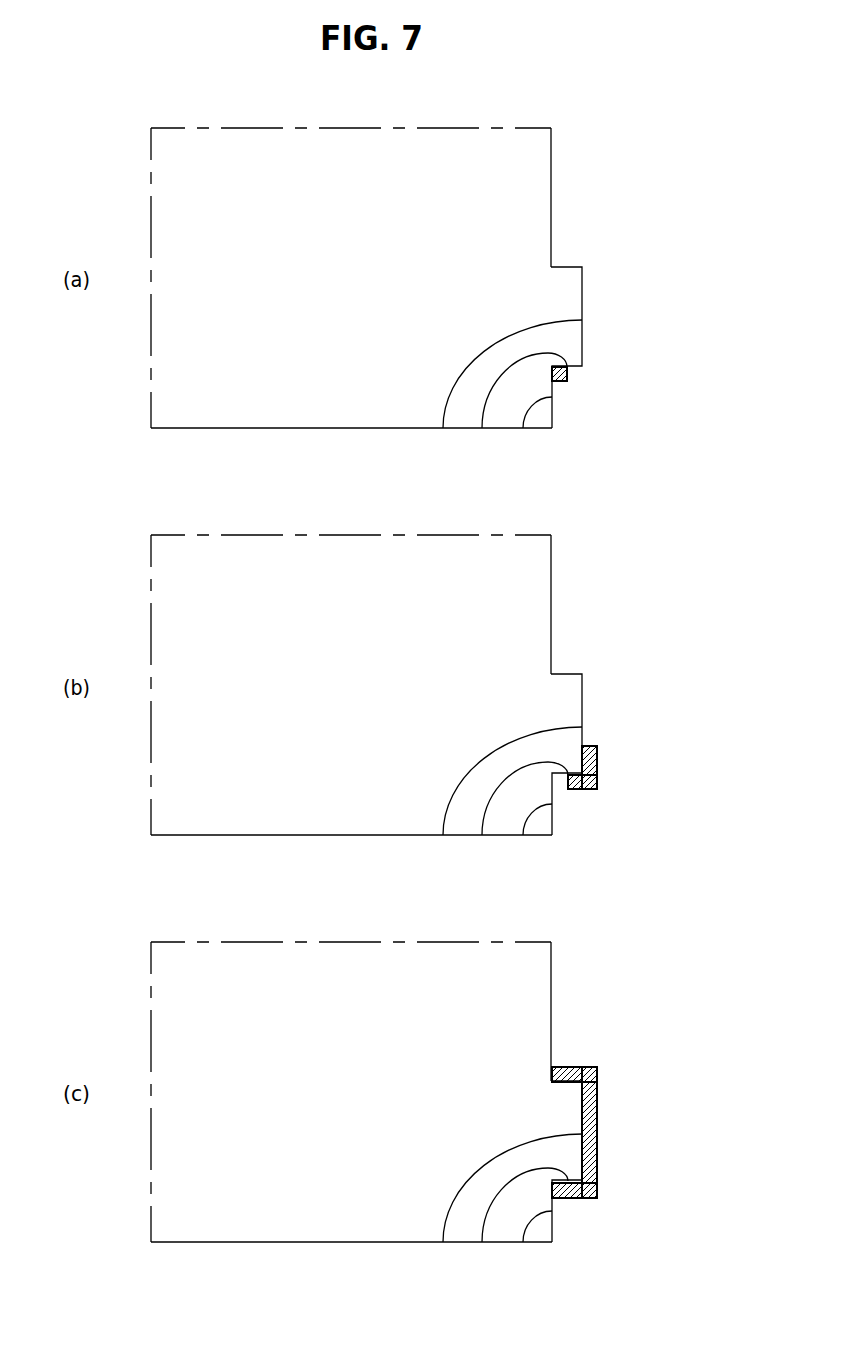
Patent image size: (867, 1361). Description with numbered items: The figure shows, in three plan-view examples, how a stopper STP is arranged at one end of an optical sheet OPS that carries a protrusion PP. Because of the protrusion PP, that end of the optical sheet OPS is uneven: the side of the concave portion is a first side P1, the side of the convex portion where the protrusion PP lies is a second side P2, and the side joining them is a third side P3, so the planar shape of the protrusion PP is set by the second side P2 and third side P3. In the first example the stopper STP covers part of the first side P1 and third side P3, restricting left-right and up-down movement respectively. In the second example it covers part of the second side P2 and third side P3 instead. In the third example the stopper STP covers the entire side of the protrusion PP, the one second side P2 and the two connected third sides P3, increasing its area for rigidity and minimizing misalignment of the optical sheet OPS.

The optical sheet OPS is at (175, 207).
The protrusion PP is at (568, 280).
The stopper STP is at (568, 373).
The first side P1 is at (523, 428).
The second side P2 is at (443, 428).
The third side P3 is at (482, 428).